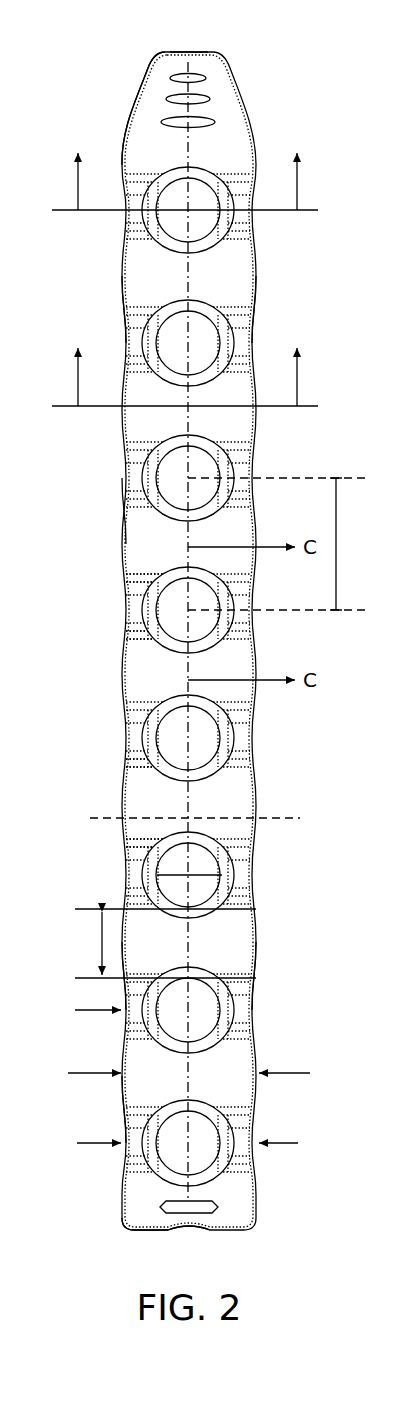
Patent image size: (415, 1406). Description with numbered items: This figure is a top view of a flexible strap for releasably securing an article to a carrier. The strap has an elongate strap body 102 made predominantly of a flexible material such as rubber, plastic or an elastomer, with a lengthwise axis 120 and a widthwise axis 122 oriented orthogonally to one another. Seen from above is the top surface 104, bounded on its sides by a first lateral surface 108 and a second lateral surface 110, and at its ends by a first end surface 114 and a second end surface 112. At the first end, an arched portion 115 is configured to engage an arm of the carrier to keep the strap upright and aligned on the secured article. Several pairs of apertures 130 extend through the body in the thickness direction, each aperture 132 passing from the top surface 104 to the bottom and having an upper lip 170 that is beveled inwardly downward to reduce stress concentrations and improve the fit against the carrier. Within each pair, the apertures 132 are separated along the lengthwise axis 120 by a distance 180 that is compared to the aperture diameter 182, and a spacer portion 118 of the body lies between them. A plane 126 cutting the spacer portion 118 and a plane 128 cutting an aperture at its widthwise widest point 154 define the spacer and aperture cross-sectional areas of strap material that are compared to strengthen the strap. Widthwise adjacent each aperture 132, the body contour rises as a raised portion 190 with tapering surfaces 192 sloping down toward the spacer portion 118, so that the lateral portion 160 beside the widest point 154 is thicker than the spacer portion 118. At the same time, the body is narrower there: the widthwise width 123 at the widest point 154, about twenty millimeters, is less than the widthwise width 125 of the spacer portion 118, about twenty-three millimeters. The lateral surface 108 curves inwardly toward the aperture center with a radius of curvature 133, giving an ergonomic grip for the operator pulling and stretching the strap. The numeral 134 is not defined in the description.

The elongate strap body 102 is at (224, 118).
The top surface 104 is at (152, 130).
The first lateral surface 108 is at (122, 300).
The second lateral surface 110 is at (257, 298).
The second end surface 112 is at (190, 46).
The first end surface 114 is at (192, 1232).
The arched portion 115 is at (178, 1232).
The spacer portion 118 is at (230, 942).
The lengthwise axis 120 is at (188, 1083).
The widthwise axis 122 is at (282, 818).
The widthwise width at the widthwise widest point 123 is at (295, 1075).
The widthwise width of the spacer portion 125 is at (295, 1148).
The plane 126 is at (310, 410).
The plane 128 is at (312, 214).
The pair of apertures 130 is at (210, 888).
The aperture 132 is at (170, 732).
The radius of curvature 133 is at (105, 1012).
The hole spacing dimension 134 is at (338, 548).
The widthwise widest point 154 is at (143, 475).
The lateral portion 160 is at (122, 498).
The upper lip 170 is at (158, 768).
The distance 180 is at (100, 953).
The diameter 182 is at (140, 893).
The raised portion 190 is at (130, 608).
The tapering surface 192 is at (138, 565).